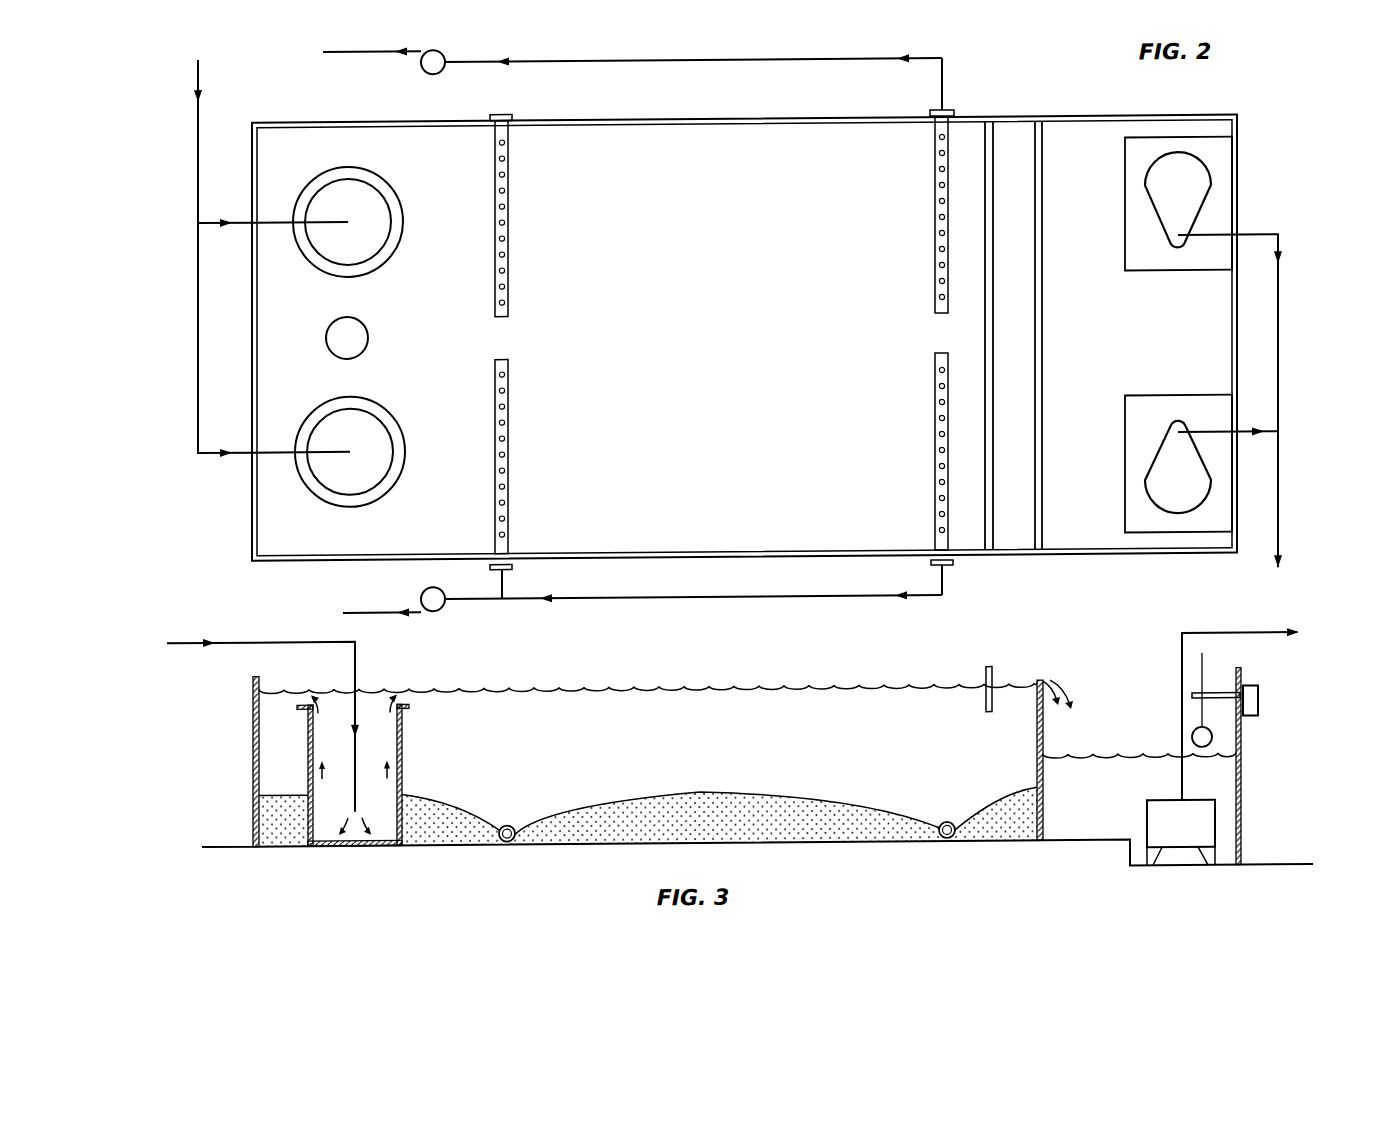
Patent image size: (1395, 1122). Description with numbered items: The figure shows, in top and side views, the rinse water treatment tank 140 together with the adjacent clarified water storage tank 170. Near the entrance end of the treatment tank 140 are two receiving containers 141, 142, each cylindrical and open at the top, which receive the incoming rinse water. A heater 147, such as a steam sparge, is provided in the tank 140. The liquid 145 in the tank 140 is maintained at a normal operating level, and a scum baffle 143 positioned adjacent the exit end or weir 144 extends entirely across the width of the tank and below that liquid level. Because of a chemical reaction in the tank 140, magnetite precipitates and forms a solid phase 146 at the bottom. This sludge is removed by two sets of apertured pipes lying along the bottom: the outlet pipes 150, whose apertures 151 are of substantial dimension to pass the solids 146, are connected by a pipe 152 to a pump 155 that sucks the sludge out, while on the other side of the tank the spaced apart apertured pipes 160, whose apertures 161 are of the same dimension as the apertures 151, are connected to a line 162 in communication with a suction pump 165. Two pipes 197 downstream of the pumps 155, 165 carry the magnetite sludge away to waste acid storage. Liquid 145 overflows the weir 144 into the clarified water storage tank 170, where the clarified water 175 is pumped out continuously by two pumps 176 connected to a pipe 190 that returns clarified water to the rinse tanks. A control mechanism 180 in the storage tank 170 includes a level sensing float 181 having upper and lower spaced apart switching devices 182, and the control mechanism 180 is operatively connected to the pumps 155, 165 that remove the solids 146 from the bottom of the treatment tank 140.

In FIG. 2, the rinse water treatment tank 140 is at (670, 116).
In FIG. 2, the receiving container 141 is at (368, 410).
In FIG. 3, the receiving container 141 is at (402, 751).
In FIG. 2, the receiving container 142 is at (392, 201).
In FIG. 2, the heater 147 is at (368, 325).
In FIG. 2, the apertured pipes 160 is at (508, 230).
In FIG. 2, the apertures 161 is at (503, 285).
In FIG. 2, the outlet pipes 150 is at (508, 497).
In FIG. 3, the outlet pipes 150 is at (503, 824).
In FIG. 2, the apertures 151 is at (504, 535).
In FIG. 2, the scum baffle 143 is at (990, 326).
In FIG. 3, the scum baffle 143 is at (990, 666).
In FIG. 2, the weir 144 is at (1042, 287).
In FIG. 3, the weir 144 is at (1037, 716).
In FIG. 2, the pumps 176 is at (1143, 194).
In FIG. 3, the pumps 176 is at (1203, 831).
In FIG. 2, the pipe 190 is at (1282, 521).
In FIG. 2, the line 162 is at (942, 74).
In FIG. 2, the suction pump 165 is at (442, 51).
In FIG. 2, the pipe 152 is at (815, 597).
In FIG. 2, the pump 155 is at (443, 606).
In FIG. 2, the pipes 197 is at (348, 50).
In FIG. 3, the liquid 145 is at (648, 710).
In FIG. 3, the solid phase 146 is at (813, 808).
In FIG. 3, the clarified water 175 is at (1139, 774).
In FIG. 3, the switching devices 182 is at (1202, 712).
In FIG. 3, the float 181 is at (1192, 737).
In FIG. 3, the control mechanism 180 is at (1258, 692).
In FIG. 3, the clarified water storage tank 170 is at (1241, 781).